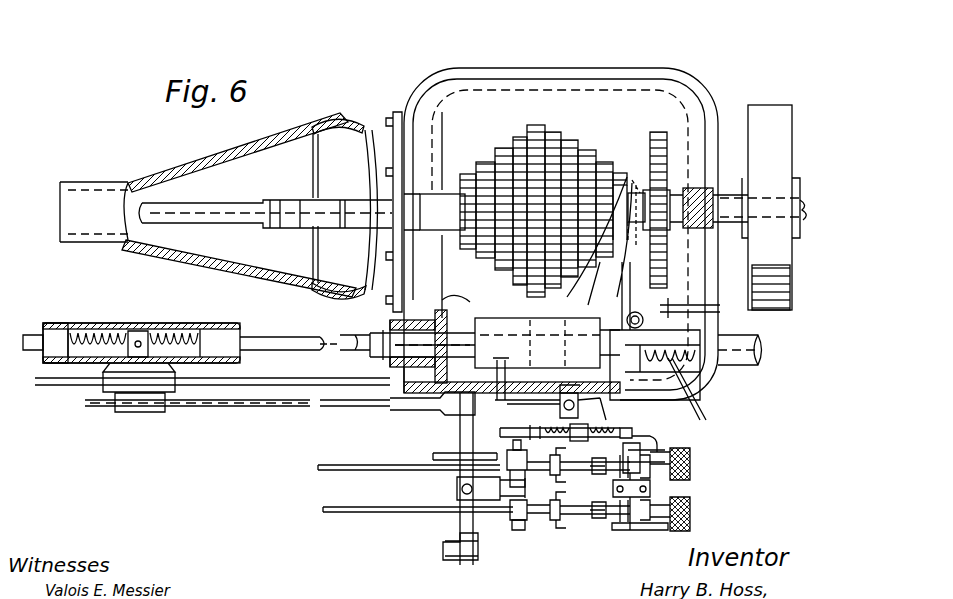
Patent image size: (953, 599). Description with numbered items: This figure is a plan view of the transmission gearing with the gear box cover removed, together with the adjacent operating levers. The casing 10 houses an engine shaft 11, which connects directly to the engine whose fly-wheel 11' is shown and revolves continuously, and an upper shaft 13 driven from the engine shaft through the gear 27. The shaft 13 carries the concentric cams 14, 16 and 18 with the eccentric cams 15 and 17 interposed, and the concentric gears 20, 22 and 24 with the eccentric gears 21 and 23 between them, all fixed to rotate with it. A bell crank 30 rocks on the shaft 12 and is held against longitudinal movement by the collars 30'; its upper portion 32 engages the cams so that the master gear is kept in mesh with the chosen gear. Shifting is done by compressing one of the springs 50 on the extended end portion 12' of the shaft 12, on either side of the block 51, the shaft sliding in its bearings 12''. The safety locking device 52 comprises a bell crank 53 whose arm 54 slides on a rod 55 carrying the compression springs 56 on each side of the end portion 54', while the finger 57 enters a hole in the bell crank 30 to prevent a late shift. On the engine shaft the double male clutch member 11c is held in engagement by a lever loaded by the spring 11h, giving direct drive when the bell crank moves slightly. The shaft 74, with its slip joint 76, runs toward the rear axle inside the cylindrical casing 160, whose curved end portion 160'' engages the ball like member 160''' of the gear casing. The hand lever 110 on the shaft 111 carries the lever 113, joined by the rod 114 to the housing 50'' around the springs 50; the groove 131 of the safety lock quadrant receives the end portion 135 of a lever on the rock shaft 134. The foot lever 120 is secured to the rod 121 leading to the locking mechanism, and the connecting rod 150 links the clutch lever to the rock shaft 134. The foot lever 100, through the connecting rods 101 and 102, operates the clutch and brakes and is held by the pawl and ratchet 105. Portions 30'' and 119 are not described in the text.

The cylindrical casing 160 is at (208, 205).
The ball like member 160''' is at (338, 113).
The curved end portion 160'' is at (339, 279).
The slip joint 76 is at (314, 240).
The shaft 74 is at (178, 220).
The casing 10 is at (393, 116).
The double male clutch member 11c is at (712, 312).
The shaft 13 is at (434, 212).
The concentric gear 24 is at (468, 173).
The eccentric gear 23 is at (483, 160).
The concentric gear 22 is at (504, 147).
The eccentric gear 21 is at (518, 135).
The concentric gear 20 is at (535, 124).
The concentric cam 14 is at (554, 133).
The eccentric cam 15 is at (572, 140).
The concentric cam 16 is at (587, 152).
The eccentric cam 17 is at (606, 162).
The concentric cam 18 is at (622, 172).
The upper portion of bell crank 32 is at (636, 182).
The gear 27 is at (657, 131).
The shifter arm 119 is at (668, 322).
The fly-wheel 11' is at (760, 192).
The shaft 11 is at (759, 222).
The bell crank 30 is at (465, 293).
The collars 30' is at (539, 337).
The housing portion 30'' is at (655, 366).
The shaft 12 is at (740, 356).
The bearings 12'' is at (405, 335).
The extended end portion 12' is at (290, 328).
The spring 50 is at (131, 328).
The housing 50'' is at (54, 328).
The block 51 is at (130, 360).
The rod 114 is at (364, 407).
The lever 113 is at (438, 404).
The finger 57 is at (496, 398).
The safety locking device 52 is at (578, 430).
The bell crank 53 is at (508, 436).
The compression springs 56 is at (624, 437).
The shaft 111 is at (460, 523).
The groove 131 is at (432, 456).
The connecting rod 150 is at (343, 465).
The end portion 135 is at (457, 478).
The connecting rod 101 is at (346, 512).
The hand lever 110 is at (452, 558).
The arm 54 is at (538, 461).
The rod 55 is at (522, 445).
The end portion 54' is at (536, 500).
The rock shaft 134 is at (518, 532).
The connecting rod 102 is at (596, 536).
The rod 121 is at (640, 437).
The foot lever 120 is at (690, 463).
The foot lever 100 is at (690, 517).
The pawl and ratchet 105 is at (664, 534).
The spring 11h is at (690, 412).